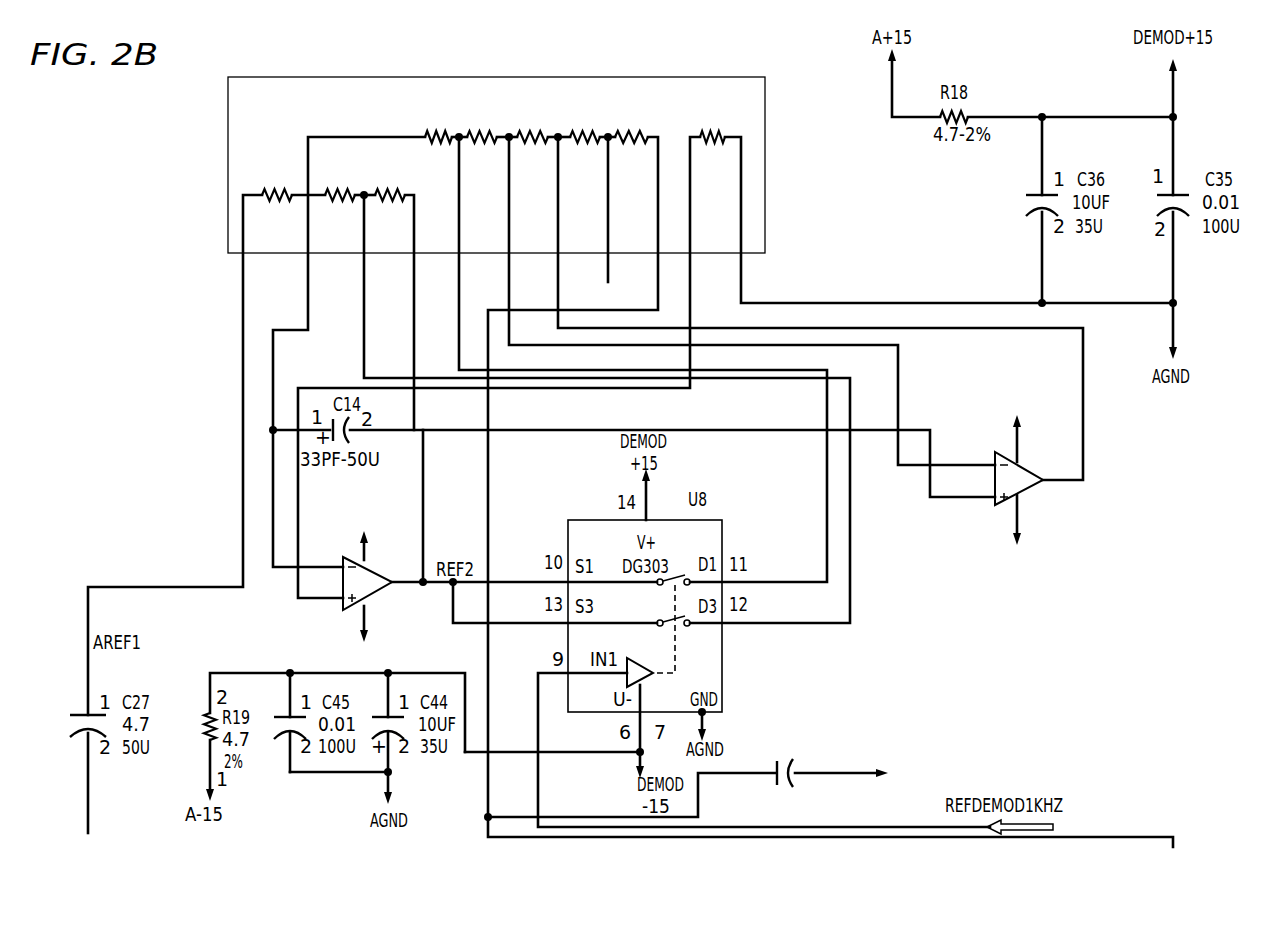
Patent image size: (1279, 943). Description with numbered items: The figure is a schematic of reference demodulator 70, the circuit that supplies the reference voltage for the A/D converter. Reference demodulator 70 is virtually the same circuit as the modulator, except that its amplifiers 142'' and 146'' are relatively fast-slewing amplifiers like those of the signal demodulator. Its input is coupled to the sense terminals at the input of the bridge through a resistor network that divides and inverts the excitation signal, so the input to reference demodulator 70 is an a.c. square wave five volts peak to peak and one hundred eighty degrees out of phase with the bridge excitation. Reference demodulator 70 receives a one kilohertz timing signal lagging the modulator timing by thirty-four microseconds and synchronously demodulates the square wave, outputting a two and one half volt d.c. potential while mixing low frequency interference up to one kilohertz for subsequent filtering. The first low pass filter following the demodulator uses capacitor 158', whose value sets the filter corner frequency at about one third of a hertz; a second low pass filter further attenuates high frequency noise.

The reference demodulator 70 is at (347, 55).
The amplifier 142'' is at (320, 585).
The amplifier 146'' is at (1052, 481).
The capacitor 158' is at (843, 751).